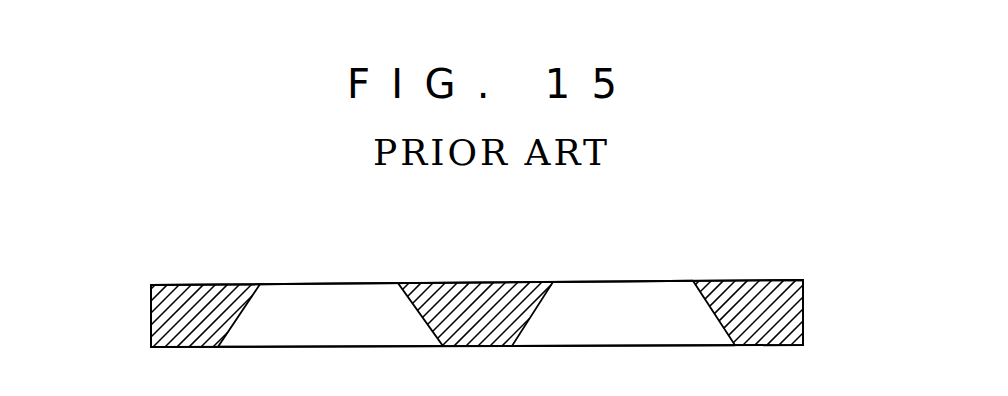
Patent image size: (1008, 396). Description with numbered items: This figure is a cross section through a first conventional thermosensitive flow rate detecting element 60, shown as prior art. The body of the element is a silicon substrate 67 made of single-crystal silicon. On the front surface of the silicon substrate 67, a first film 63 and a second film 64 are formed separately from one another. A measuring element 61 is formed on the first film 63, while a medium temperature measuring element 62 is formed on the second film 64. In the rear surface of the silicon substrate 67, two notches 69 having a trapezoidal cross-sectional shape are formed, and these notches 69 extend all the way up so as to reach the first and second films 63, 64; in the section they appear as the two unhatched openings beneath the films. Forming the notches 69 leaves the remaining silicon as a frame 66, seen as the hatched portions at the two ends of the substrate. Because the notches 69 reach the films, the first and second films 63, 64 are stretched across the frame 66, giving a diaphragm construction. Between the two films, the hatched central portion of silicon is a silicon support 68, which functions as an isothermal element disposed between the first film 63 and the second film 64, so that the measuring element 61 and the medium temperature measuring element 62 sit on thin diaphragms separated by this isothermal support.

The prior art surface acoustic wave device 60 is at (481, 306).
The measuring element 61 is at (378, 283).
The medium temperature measuring element 62 is at (666, 282).
The first film 63 is at (290, 283).
The second film 64 is at (577, 282).
The frame 66 is at (150, 327).
The silicon substrate 67 is at (805, 317).
The silicon support 68 is at (477, 347).
The notches 69 is at (327, 335).